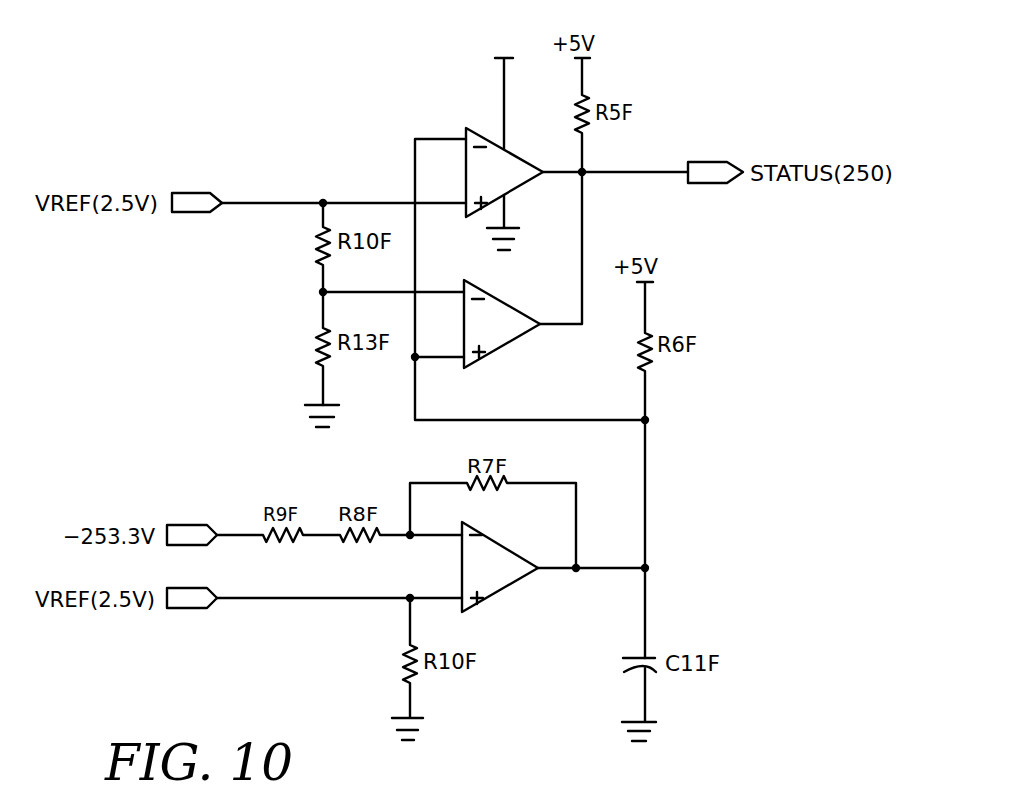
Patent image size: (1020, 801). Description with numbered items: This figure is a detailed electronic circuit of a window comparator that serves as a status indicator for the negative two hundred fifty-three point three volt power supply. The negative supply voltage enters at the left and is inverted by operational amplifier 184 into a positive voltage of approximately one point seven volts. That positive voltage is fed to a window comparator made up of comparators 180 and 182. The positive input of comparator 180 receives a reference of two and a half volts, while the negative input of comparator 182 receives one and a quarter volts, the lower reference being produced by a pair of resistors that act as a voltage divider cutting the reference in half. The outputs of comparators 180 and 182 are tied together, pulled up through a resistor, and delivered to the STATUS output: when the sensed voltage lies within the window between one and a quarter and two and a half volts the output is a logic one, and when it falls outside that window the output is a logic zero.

The comparator 180 is at (477, 161).
The comparator 182 is at (473, 318).
The operational amplifier 184 is at (473, 563).